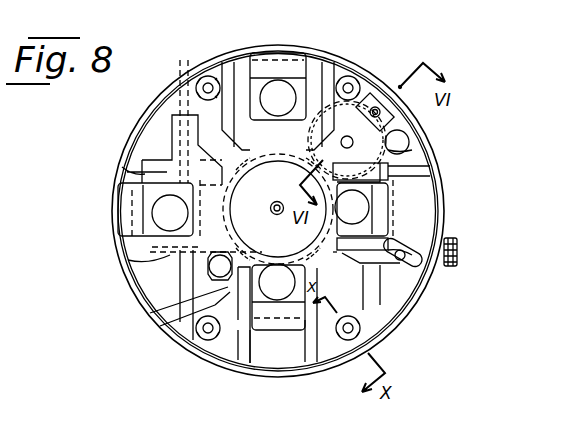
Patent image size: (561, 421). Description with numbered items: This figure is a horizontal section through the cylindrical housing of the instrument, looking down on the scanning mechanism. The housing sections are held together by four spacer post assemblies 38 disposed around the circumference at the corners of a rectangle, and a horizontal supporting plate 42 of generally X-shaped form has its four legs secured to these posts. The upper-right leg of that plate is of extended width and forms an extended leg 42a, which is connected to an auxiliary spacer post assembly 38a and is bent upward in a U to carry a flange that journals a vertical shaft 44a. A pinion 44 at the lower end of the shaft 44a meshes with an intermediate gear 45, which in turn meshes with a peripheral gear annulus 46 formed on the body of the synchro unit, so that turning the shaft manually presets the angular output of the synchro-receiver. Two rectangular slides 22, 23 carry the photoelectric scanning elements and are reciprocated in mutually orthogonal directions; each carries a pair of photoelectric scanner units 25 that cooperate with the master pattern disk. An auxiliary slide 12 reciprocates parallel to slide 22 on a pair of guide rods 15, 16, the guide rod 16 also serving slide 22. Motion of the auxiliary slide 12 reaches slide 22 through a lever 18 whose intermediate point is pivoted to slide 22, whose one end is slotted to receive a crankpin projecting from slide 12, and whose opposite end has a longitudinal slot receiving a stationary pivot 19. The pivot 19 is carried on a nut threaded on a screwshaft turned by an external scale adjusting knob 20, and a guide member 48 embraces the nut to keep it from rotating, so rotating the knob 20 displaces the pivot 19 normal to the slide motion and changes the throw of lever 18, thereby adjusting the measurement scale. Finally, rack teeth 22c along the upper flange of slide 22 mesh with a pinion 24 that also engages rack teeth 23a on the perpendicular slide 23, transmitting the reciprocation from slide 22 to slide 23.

The auxiliary slide 12 is at (175, 142).
The guide rod 15 is at (185, 317).
The guide rod 16 is at (245, 343).
The lever 18 is at (373, 254).
The stationary pivot 19 is at (403, 260).
The scale adjusting knob 20 is at (450, 268).
The slide 22 is at (240, 85).
The rack teeth 22c is at (233, 291).
The slide 23 is at (167, 173).
The rack teeth 23a is at (128, 260).
The pinion 24 is at (209, 277).
The photoelectric scanner units 25 is at (299, 50).
The spacer post assemblies 38 is at (336, 95).
The auxiliary spacer post assembly 38a is at (412, 150).
The supporting plate 42 is at (347, 140).
The extended leg 42a is at (393, 123).
The pinion 44 is at (363, 127).
The vertical shaft 44a is at (390, 90).
The intermediate gear 45 is at (312, 140).
The peripheral gear annulus 46 is at (262, 135).
The guide member 48 is at (370, 270).